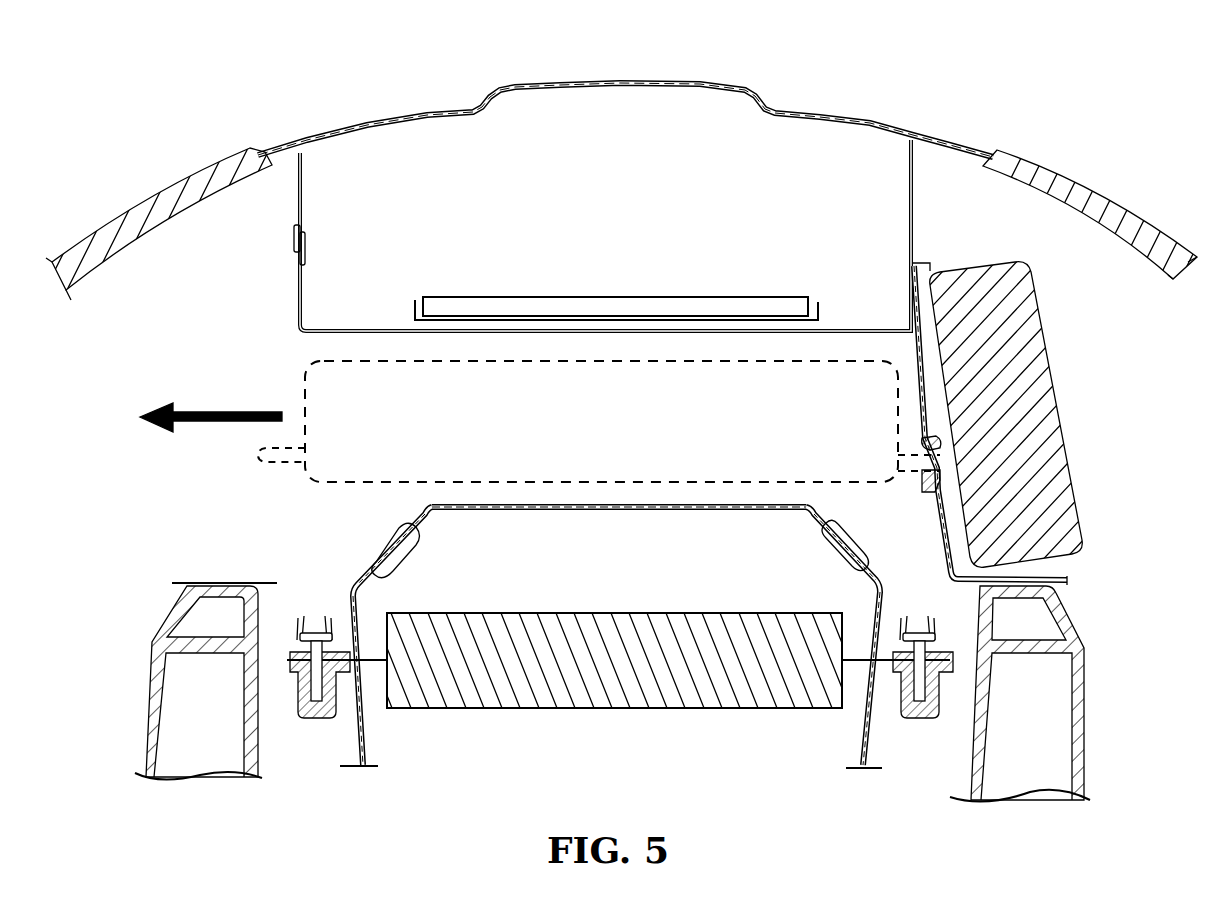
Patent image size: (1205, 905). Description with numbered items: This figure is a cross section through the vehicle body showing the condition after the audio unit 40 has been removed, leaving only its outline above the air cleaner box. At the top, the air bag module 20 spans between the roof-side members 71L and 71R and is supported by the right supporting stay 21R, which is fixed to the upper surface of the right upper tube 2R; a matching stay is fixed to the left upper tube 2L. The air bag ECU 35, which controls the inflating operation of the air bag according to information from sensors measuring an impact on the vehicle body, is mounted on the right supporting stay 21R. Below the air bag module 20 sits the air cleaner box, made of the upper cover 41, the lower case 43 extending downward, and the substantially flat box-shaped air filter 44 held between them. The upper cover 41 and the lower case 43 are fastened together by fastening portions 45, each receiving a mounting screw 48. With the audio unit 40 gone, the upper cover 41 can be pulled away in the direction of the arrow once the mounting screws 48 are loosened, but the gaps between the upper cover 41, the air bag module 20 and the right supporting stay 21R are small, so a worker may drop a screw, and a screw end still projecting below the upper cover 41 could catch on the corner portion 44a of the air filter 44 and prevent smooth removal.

The air bag module 20 is at (770, 72).
The left roof side rail 71L is at (180, 180).
The right roof side rail 71R is at (1052, 170).
The right supporting stay 21R is at (915, 360).
The air bag ECU 35 is at (1040, 325).
The audio unit 40 is at (305, 383).
The upper cover 41 is at (582, 505).
The air filter 44 is at (636, 636).
The corner portion 44a is at (838, 612).
The fastening portion 45 is at (315, 612).
The mounting screw 48 is at (915, 655).
The left upper tube 2L is at (160, 718).
The right upper tube 2R is at (1090, 714).
The lower case 43 is at (872, 742).